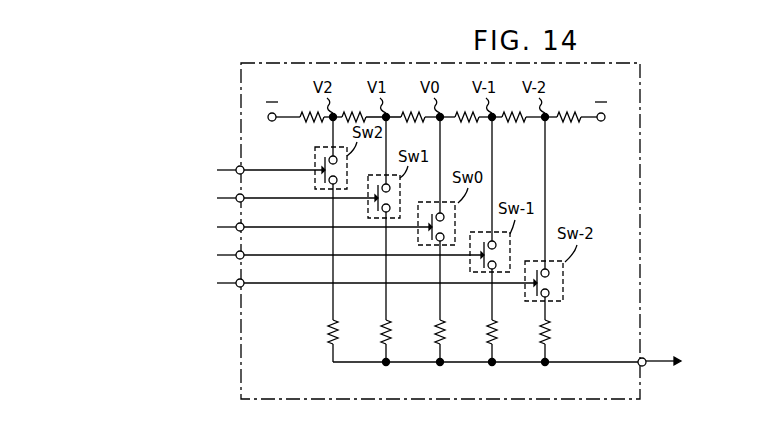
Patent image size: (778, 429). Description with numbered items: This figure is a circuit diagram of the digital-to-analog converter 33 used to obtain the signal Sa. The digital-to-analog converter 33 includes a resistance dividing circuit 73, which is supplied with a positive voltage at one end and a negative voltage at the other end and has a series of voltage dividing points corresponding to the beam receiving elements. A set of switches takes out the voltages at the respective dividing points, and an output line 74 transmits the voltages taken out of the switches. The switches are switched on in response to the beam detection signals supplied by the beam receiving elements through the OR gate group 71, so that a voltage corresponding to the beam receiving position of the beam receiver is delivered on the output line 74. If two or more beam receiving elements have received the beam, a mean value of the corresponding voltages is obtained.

The digital-to-analog converter 33 is at (641, 242).
The resistance dividing circuit 73 is at (575, 124).
The output line 74 is at (593, 361).
The OR gate group 71 is at (212, 300).